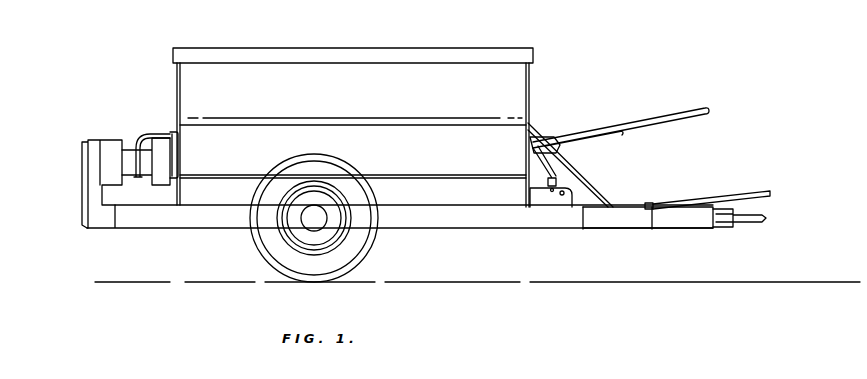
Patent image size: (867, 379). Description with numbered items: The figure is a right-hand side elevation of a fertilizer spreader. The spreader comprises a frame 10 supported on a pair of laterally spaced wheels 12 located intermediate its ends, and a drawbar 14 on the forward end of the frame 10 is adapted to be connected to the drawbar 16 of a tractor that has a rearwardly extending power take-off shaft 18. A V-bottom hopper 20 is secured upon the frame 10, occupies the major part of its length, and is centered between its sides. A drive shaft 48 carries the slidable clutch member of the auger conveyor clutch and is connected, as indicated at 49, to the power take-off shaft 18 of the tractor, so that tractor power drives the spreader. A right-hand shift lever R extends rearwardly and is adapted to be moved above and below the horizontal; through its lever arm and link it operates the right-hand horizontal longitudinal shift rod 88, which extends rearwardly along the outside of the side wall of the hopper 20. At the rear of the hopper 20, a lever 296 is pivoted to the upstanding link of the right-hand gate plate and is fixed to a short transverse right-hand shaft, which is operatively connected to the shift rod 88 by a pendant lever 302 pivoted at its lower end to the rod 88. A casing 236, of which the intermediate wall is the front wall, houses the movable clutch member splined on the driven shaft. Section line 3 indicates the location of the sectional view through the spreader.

The frame 10 is at (486, 228).
The wheels 12 is at (370, 253).
The drawbar 14 is at (688, 226).
The drawbar of a tractor 16 is at (756, 224).
The power take-off shaft 18 is at (738, 197).
The V-bottom hopper 20 is at (469, 48).
The section line 3- 3 is at (133, 87).
The drive shaft 48 is at (627, 205).
The connection 49 is at (653, 205).
The right-hand horizontal longitudinal shift rod 88 is at (458, 162).
The casing 236 is at (80, 180).
The lever 296 is at (144, 131).
The pendant lever 302 is at (176, 160).
The right-hand shift lever R is at (641, 126).